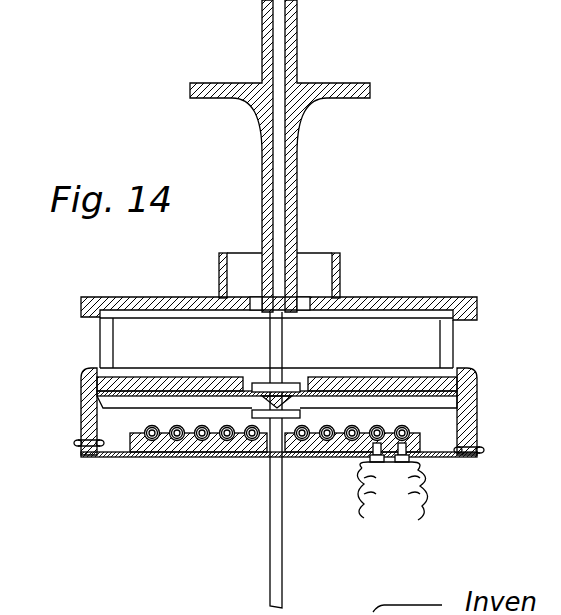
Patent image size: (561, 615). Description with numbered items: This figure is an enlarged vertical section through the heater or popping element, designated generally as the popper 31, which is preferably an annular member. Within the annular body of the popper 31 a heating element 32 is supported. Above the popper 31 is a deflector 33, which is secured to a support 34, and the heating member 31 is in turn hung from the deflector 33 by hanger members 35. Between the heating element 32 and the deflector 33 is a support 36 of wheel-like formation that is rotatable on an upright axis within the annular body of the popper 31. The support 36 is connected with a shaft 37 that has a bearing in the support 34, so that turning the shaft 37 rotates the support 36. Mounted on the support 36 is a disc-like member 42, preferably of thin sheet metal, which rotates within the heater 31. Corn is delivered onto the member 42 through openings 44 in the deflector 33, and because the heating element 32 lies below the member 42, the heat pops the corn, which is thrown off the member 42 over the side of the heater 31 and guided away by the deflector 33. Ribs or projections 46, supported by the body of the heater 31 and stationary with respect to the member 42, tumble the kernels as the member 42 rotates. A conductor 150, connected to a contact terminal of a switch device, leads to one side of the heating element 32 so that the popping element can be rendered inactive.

The heater or popper 31 is at (81, 416).
The heating element 32 is at (208, 453).
The deflector 33 is at (445, 282).
The support 34 is at (296, 170).
The hanger members 35 is at (100, 343).
The support 36 is at (315, 402).
The shaft 37 is at (278, 562).
The disc like member 42 is at (172, 377).
The openings 44 is at (230, 298).
The ribs or projections 46 is at (228, 391).
The conductor 150 is at (418, 512).